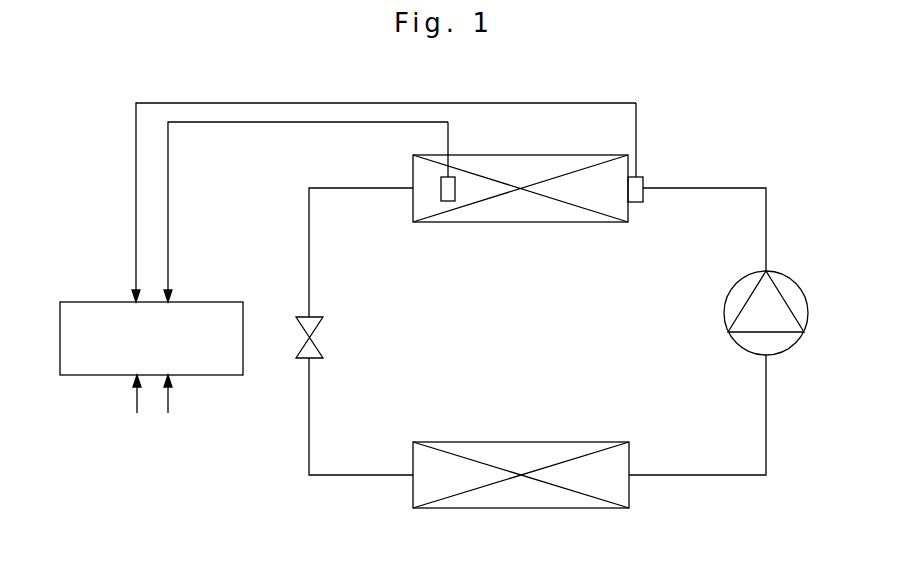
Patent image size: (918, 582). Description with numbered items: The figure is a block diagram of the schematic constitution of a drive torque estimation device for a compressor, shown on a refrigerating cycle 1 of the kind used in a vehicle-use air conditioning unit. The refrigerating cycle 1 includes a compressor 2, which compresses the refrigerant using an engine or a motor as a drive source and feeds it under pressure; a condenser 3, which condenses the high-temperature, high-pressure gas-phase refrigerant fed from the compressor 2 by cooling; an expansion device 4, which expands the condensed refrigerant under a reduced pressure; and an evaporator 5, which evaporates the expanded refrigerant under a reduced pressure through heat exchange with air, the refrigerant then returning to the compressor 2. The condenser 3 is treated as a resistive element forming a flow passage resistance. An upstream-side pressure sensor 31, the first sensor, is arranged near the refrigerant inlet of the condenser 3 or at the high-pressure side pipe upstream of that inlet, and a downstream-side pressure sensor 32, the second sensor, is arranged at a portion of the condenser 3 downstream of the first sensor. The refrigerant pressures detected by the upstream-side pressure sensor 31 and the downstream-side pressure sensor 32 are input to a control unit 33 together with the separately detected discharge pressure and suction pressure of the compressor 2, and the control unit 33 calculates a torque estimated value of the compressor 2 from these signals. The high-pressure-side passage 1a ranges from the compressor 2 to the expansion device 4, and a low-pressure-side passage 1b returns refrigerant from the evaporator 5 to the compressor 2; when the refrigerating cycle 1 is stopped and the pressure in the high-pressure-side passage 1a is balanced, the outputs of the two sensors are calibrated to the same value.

The refrigerating cycle 1 is at (625, 85).
The high-pressure-side passage 1a is at (716, 188).
The low-pressure pipe 1b is at (684, 476).
The compressor 2 is at (784, 278).
The condenser 3 is at (524, 222).
The upstream-side pressure sensor 31 is at (643, 201).
The downstream-side pressure sensor 32 is at (441, 200).
The control unit 33 is at (243, 302).
The expansion device 4 is at (318, 322).
The evaporator 5 is at (520, 509).